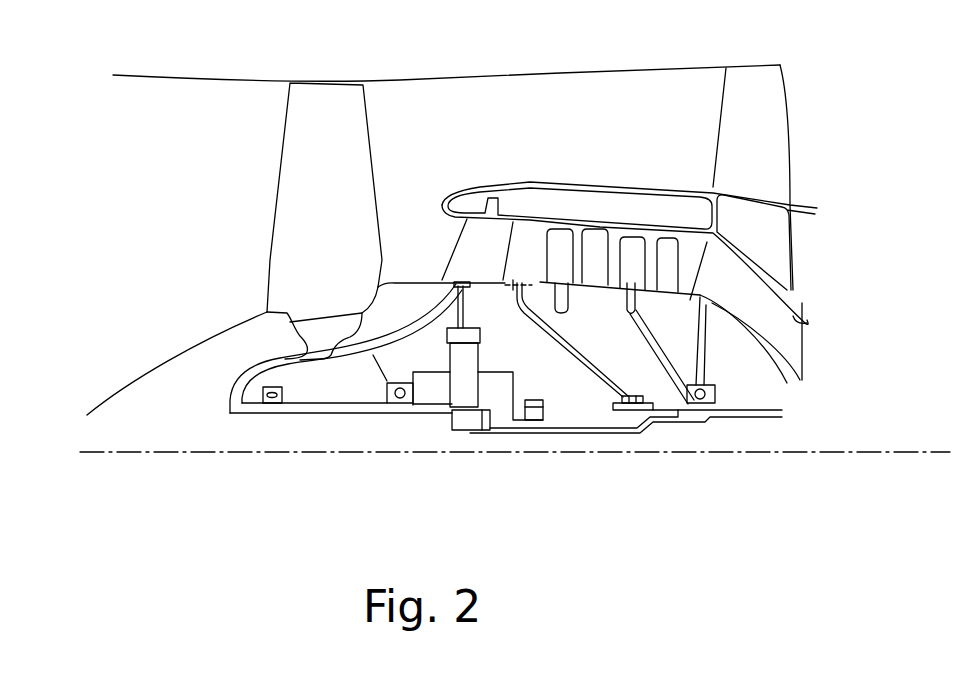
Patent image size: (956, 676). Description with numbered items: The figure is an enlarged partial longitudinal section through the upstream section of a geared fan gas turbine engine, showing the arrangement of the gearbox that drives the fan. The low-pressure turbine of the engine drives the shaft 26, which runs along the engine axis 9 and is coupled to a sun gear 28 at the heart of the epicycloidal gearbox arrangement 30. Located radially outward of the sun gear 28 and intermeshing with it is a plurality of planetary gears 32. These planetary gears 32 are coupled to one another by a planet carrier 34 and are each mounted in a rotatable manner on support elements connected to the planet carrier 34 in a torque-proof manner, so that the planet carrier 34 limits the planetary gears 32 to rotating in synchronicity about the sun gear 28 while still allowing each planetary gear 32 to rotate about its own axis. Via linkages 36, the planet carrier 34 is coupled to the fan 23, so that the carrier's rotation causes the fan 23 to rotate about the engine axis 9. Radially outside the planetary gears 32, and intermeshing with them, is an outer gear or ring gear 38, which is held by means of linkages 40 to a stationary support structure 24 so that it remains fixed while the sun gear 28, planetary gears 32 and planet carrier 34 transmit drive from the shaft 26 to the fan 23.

The engine axis 9 is at (257, 453).
The fan 23 is at (292, 200).
The stationary support structure 24 is at (473, 246).
The shaft 26 is at (601, 434).
The sun gear 28 is at (463, 408).
The epicycloidal gearbox arrangement 30 is at (450, 395).
The planetary gears 32 is at (465, 418).
The planet carrier 34 is at (504, 402).
The linkages 36 is at (421, 424).
The ring gear 38 is at (447, 336).
The linkages 40 is at (466, 316).